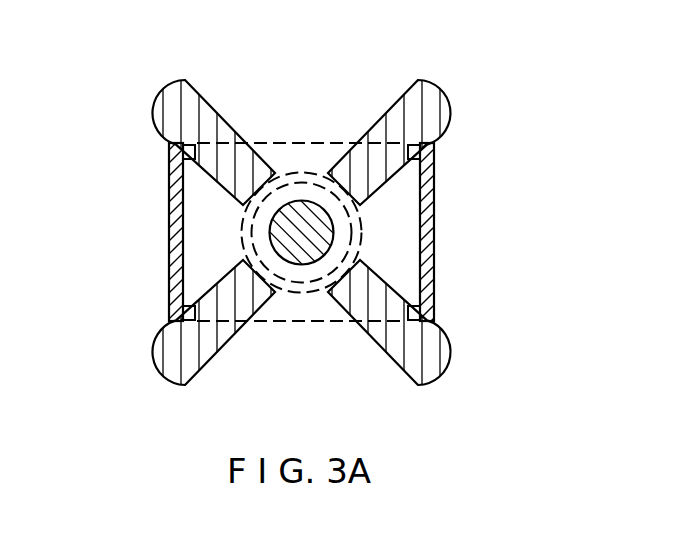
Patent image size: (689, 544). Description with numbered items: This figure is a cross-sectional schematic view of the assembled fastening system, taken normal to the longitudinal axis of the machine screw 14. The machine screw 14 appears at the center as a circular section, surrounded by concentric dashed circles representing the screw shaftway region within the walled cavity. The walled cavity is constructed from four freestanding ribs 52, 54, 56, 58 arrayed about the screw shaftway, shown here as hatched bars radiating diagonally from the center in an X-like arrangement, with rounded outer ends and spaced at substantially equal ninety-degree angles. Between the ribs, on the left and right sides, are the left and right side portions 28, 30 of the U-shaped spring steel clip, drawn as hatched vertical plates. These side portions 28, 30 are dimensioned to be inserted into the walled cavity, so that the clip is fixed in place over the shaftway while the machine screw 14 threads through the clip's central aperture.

The machine screw 14 is at (298, 221).
The left side portion 28 is at (437, 232).
The right side portion 30 is at (168, 230).
The freestanding rib 52 is at (415, 84).
The freestanding rib 54 is at (147, 113).
The freestanding rib 56 is at (148, 360).
The freestanding rib 58 is at (457, 348).